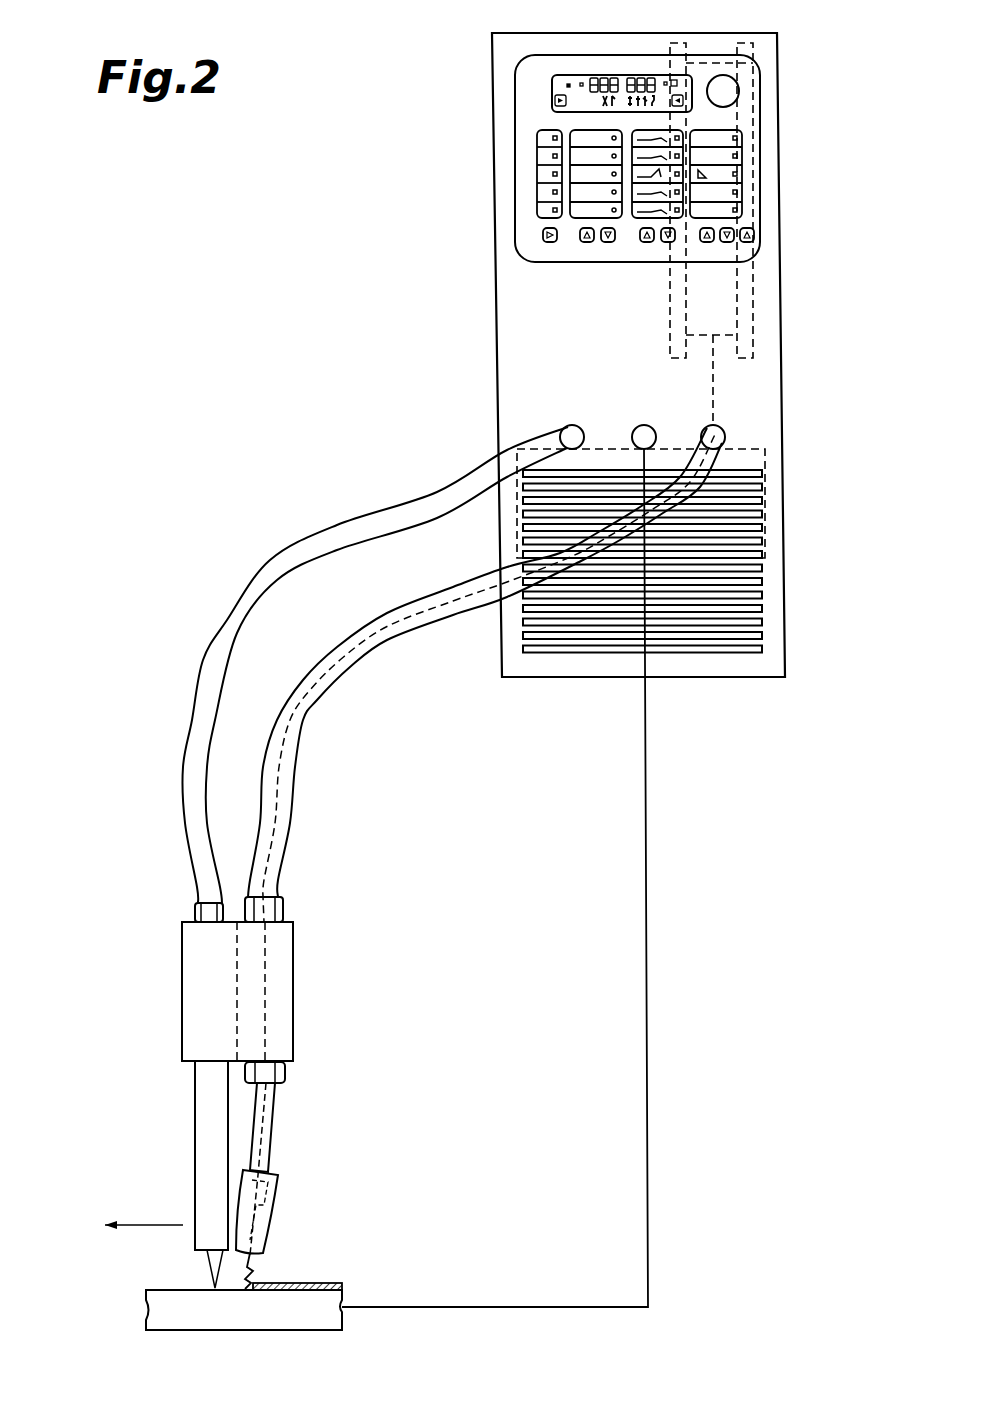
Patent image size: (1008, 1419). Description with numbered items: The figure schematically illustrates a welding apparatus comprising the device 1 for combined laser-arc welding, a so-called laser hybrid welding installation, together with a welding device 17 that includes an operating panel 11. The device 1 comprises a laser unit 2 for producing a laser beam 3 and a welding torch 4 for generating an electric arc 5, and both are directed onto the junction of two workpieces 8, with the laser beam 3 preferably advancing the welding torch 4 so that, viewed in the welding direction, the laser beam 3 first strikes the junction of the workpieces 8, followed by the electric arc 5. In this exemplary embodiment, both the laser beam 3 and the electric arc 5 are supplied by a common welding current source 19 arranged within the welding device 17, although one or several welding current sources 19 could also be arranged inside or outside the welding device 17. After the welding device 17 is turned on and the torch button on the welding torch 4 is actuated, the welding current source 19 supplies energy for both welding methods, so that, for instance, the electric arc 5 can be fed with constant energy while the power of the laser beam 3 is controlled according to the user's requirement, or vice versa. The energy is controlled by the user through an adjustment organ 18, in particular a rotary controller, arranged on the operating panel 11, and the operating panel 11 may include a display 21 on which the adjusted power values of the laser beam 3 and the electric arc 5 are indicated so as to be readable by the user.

The device for combined laser-arc welding 1 is at (230, 282).
The laser unit 2 is at (165, 1011).
The laser beam 3 is at (222, 1262).
The welding torch 4 is at (290, 1138).
The electric arc 5 is at (262, 1273).
The workpieces 8 is at (178, 1320).
The operating panel 11 is at (533, 101).
The welding device 17 is at (445, 232).
The adjustment organ 18 is at (724, 92).
The welding current source 19 is at (748, 457).
The display 21 is at (574, 138).